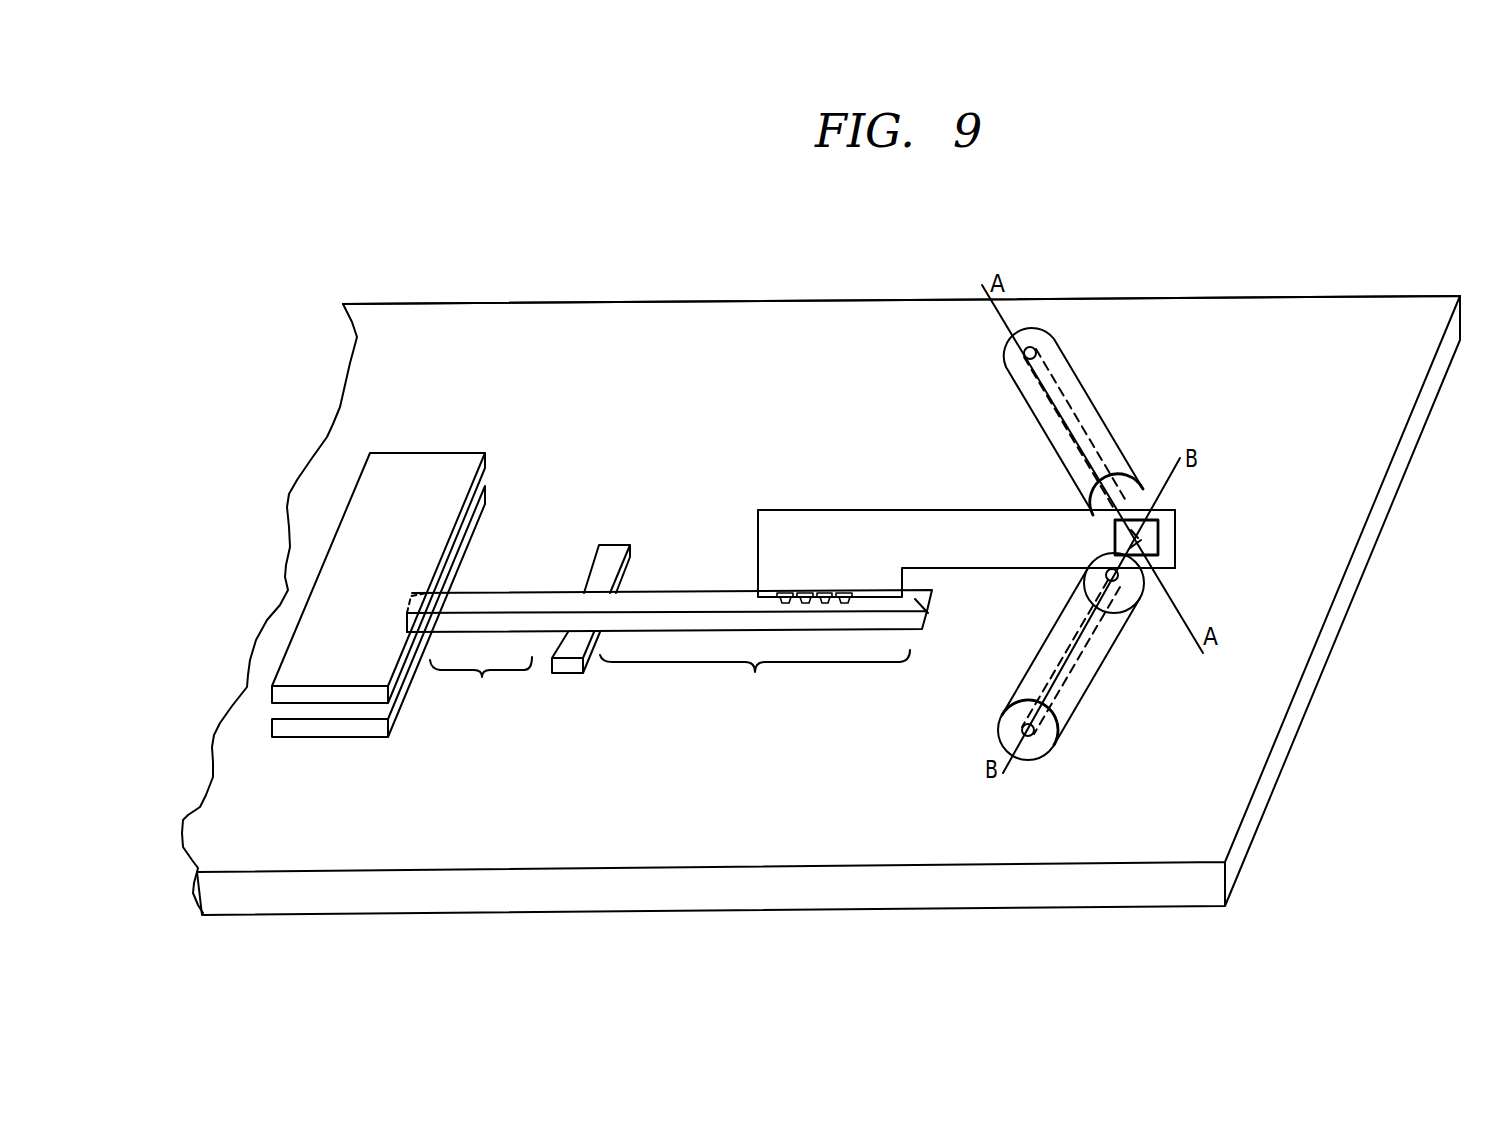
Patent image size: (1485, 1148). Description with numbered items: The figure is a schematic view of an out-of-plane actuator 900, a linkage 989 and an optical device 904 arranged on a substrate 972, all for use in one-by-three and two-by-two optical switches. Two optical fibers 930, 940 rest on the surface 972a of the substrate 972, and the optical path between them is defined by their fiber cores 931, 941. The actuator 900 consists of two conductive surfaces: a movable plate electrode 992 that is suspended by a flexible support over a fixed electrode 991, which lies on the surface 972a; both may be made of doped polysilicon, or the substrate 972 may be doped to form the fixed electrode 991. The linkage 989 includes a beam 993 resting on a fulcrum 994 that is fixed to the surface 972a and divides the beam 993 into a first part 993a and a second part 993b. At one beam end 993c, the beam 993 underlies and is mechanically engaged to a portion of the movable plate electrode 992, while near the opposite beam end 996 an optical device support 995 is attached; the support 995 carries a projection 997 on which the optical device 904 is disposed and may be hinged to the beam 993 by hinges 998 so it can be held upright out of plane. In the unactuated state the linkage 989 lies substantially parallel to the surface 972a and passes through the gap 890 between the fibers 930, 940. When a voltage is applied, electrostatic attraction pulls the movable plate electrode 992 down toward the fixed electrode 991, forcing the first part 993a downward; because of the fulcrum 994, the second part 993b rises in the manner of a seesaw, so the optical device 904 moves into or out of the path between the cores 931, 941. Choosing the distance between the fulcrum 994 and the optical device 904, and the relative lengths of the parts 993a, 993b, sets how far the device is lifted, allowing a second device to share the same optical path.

The out-of-plane actuator 900 is at (415, 531).
The movable plate electrode 992 is at (475, 447).
The fixed electrode 991 is at (492, 487).
The beam 993 is at (586, 630).
The first part 993a is at (481, 685).
The second part 993b is at (755, 680).
The beam end 993c is at (408, 612).
The beam end 996 is at (927, 613).
The fulcrum 994 is at (620, 540).
The linkage 989 is at (933, 537).
The optical device support 995 is at (882, 560).
The projection 997 is at (1018, 523).
The hinges 998 is at (787, 592).
The optical device 904 is at (1162, 535).
The gap 890 is at (1148, 575).
The optical fiber 940 is at (1068, 368).
The fiber core 941 is at (1078, 418).
The optical fiber 930 is at (1090, 683).
The fiber core 931 is at (1063, 687).
The substrate 972 is at (1322, 292).
The substrate surface 972a is at (1368, 371).